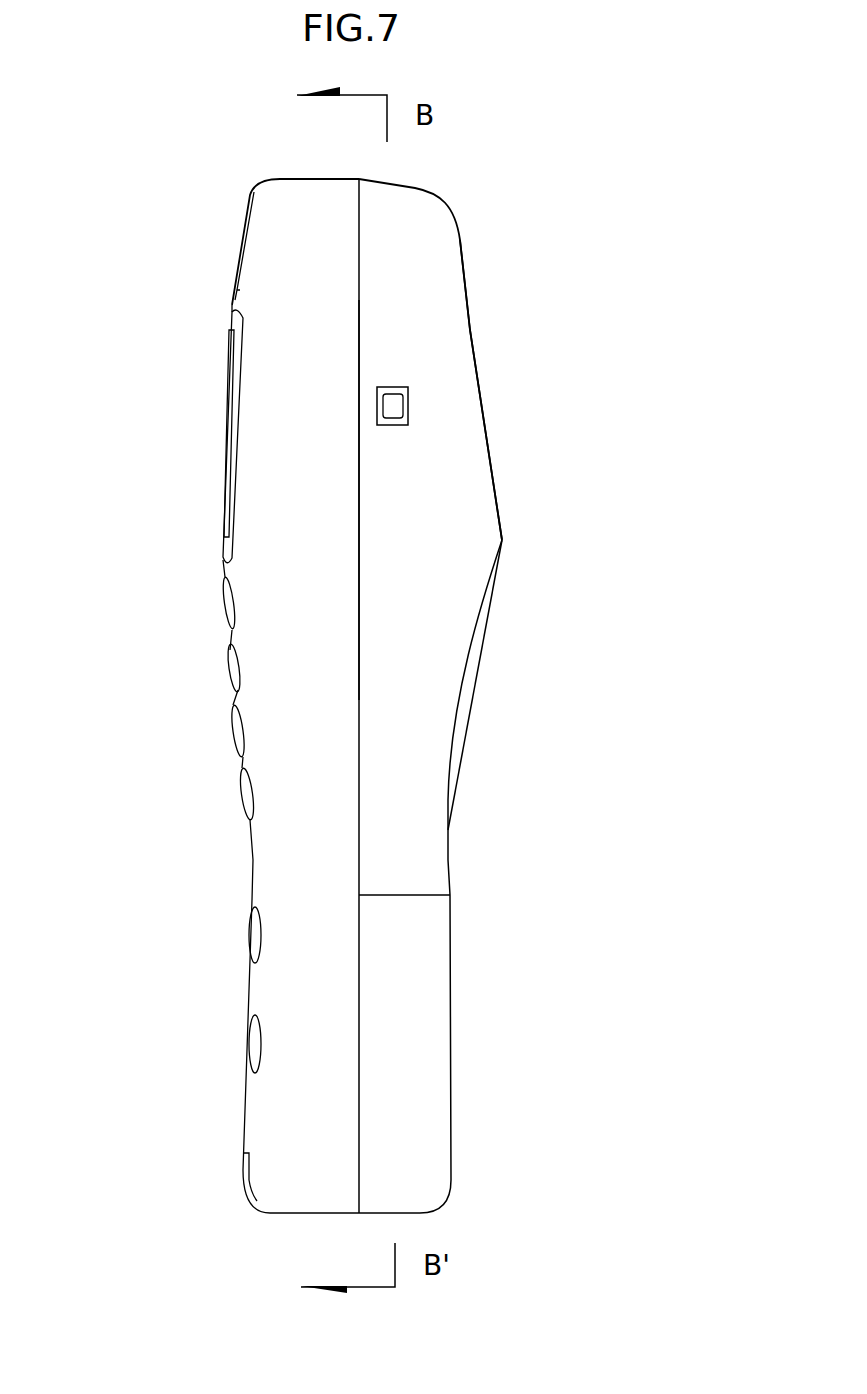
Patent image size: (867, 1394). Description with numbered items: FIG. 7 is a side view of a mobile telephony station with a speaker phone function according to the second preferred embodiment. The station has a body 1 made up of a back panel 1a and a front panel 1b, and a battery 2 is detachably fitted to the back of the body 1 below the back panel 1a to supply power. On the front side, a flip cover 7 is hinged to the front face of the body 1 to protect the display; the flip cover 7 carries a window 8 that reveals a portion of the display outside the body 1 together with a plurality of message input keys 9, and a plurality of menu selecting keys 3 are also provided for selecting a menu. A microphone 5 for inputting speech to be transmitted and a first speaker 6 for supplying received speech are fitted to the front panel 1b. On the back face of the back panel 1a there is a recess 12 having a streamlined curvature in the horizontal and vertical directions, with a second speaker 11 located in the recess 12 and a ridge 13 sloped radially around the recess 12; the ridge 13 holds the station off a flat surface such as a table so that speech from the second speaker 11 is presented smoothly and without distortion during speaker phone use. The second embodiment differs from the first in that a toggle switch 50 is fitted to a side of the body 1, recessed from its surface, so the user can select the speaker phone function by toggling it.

The body 1 is at (467, 287).
The back panel 1a is at (440, 390).
The front panel 1b is at (303, 497).
The battery 2 is at (412, 1072).
The menu selecting keys 3 is at (253, 1047).
The microphone 5 is at (243, 1168).
The first speaker 6 is at (238, 258).
The flip cover 7 is at (280, 618).
The window 8 is at (223, 430).
The message input keys 9 is at (235, 728).
The second speaker 11 is at (463, 683).
The recess 12 is at (453, 798).
The ridge 13 is at (502, 543).
The toggle switch 50 is at (392, 408).